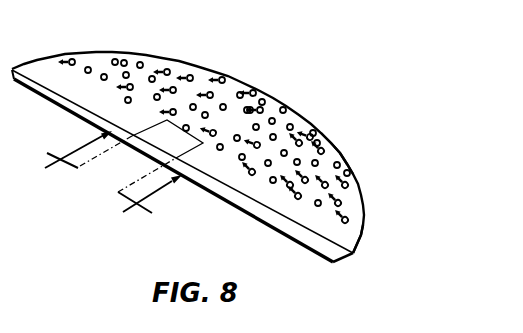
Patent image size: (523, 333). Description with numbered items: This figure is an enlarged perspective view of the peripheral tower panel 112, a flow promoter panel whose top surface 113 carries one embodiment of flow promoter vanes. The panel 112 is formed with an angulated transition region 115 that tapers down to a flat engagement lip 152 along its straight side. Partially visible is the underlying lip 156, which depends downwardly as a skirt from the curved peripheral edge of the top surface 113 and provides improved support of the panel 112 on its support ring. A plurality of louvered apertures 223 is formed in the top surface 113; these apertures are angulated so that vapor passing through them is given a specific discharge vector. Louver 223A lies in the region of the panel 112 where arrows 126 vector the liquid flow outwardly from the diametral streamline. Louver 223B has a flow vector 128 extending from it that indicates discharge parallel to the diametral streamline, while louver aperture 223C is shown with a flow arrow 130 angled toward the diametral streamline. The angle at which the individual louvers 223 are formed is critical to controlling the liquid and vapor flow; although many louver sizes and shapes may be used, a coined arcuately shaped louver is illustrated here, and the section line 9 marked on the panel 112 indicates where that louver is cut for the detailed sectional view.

The section line 9- 9 is at (117, 175).
The peripheral tower panel 112 is at (278, 100).
The top surface 113 is at (336, 152).
The angulated transition region 115 is at (352, 253).
The arrows 126 is at (350, 173).
The flow vector 128 is at (258, 92).
The flow arrow 130 is at (113, 61).
The flat engagement lip 152 is at (286, 233).
The underlying lip 156 is at (362, 240).
The louvered apertures 223 is at (313, 131).
The louver 223A is at (349, 185).
The louver 223B is at (260, 98).
The louver aperture 223C is at (124, 59).